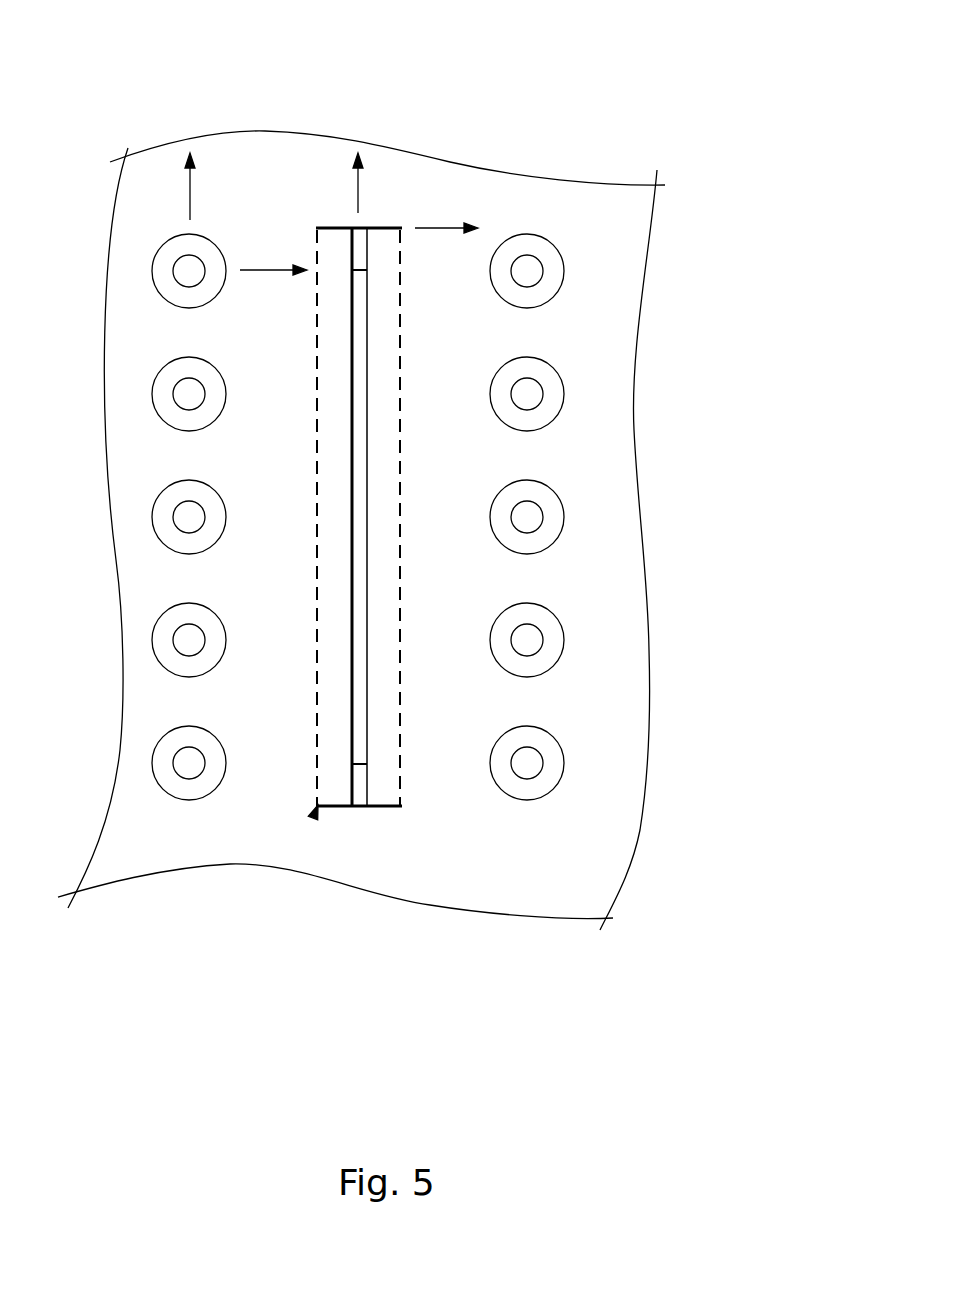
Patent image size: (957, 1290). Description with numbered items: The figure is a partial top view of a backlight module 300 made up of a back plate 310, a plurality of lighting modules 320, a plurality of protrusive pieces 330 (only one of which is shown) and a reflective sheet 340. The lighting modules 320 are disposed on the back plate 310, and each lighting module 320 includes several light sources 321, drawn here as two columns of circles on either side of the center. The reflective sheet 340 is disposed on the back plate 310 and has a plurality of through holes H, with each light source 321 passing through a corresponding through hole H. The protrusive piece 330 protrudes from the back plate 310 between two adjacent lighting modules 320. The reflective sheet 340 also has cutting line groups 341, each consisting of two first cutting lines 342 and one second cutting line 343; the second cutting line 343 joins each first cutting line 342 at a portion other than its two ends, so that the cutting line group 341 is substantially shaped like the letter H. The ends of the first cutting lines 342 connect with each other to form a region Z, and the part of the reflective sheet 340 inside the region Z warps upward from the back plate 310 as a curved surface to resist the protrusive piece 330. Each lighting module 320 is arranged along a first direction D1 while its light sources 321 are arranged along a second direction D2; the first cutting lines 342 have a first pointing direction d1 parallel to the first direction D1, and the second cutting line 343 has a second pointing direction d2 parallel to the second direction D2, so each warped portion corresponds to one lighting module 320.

The backlight module 300 is at (48, 31).
The back plate 310 is at (358, 798).
The lighting module 320 is at (653, 505).
The light source 321 is at (567, 272).
The protrusive piece 330 is at (360, 448).
The reflective sheet 340 is at (618, 535).
The cutting line group 341 is at (528, 590).
The first cutting line 342 is at (382, 228).
The second cutting line 343 is at (367, 720).
The through hole H is at (545, 225).
The region Z is at (315, 811).
The first direction D1 is at (267, 270).
The second direction D2 is at (190, 197).
The first pointing direction d1 is at (437, 228).
The second pointing direction d2 is at (358, 188).